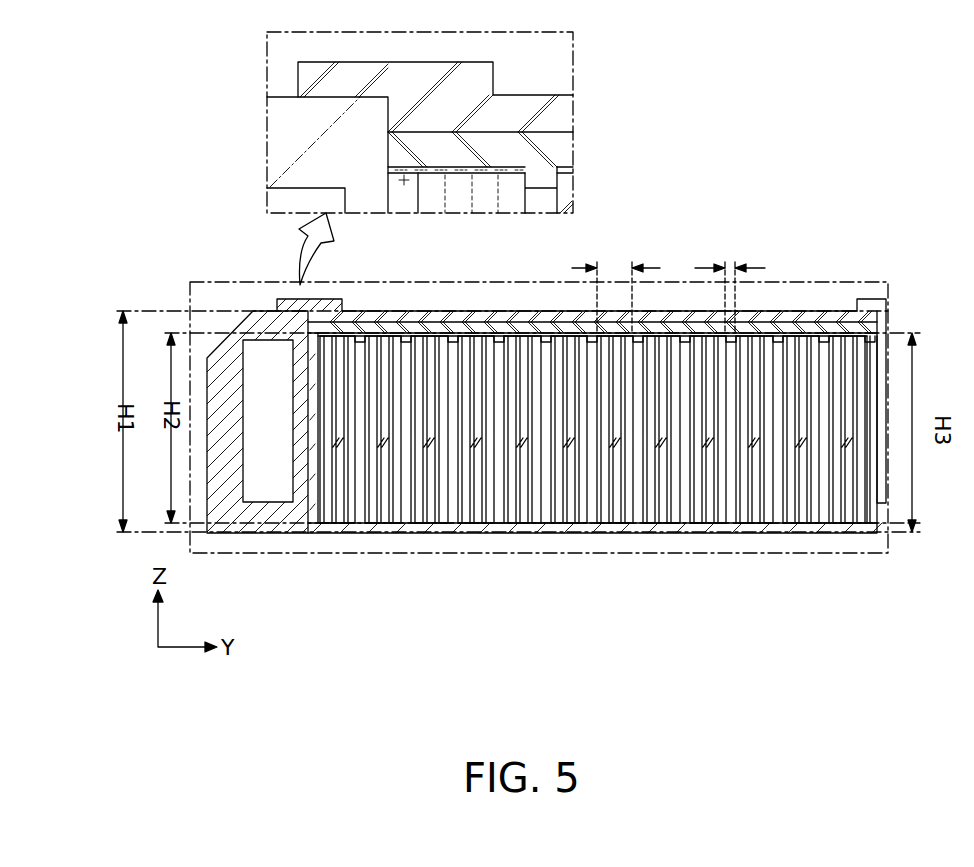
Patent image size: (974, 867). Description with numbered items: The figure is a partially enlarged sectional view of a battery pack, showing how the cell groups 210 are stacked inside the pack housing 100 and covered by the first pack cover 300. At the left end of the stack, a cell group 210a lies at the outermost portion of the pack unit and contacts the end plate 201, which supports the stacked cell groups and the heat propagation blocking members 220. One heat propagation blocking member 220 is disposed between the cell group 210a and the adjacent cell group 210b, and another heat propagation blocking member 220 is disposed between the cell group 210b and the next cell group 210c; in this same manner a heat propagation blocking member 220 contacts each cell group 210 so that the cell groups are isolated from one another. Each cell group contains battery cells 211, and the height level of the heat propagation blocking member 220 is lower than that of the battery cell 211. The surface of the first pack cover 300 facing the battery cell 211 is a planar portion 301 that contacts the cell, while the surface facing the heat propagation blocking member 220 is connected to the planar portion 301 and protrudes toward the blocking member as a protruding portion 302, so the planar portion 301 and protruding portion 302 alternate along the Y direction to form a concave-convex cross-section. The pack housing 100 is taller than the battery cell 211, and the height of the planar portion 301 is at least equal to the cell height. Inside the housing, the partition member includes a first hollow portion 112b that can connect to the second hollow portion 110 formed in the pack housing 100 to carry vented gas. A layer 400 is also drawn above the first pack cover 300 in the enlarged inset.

The pack housing 100 is at (260, 520).
The second hollow portion 110 is at (265, 392).
The first hollow portion 112b is at (880, 473).
The end plate 201 is at (312, 530).
The cell group 210 is at (639, 439).
The cell group 210a is at (332, 523).
The cell group 210b is at (376, 523).
The cell group 210c is at (436, 523).
The battery cell 211 is at (703, 513).
The heat propagation blocking member 220 is at (405, 340).
The first pack cover 300 is at (862, 299).
The planar portion 301 is at (616, 285).
The protruding portion 302 is at (730, 285).
The cover layer 400 is at (805, 311).